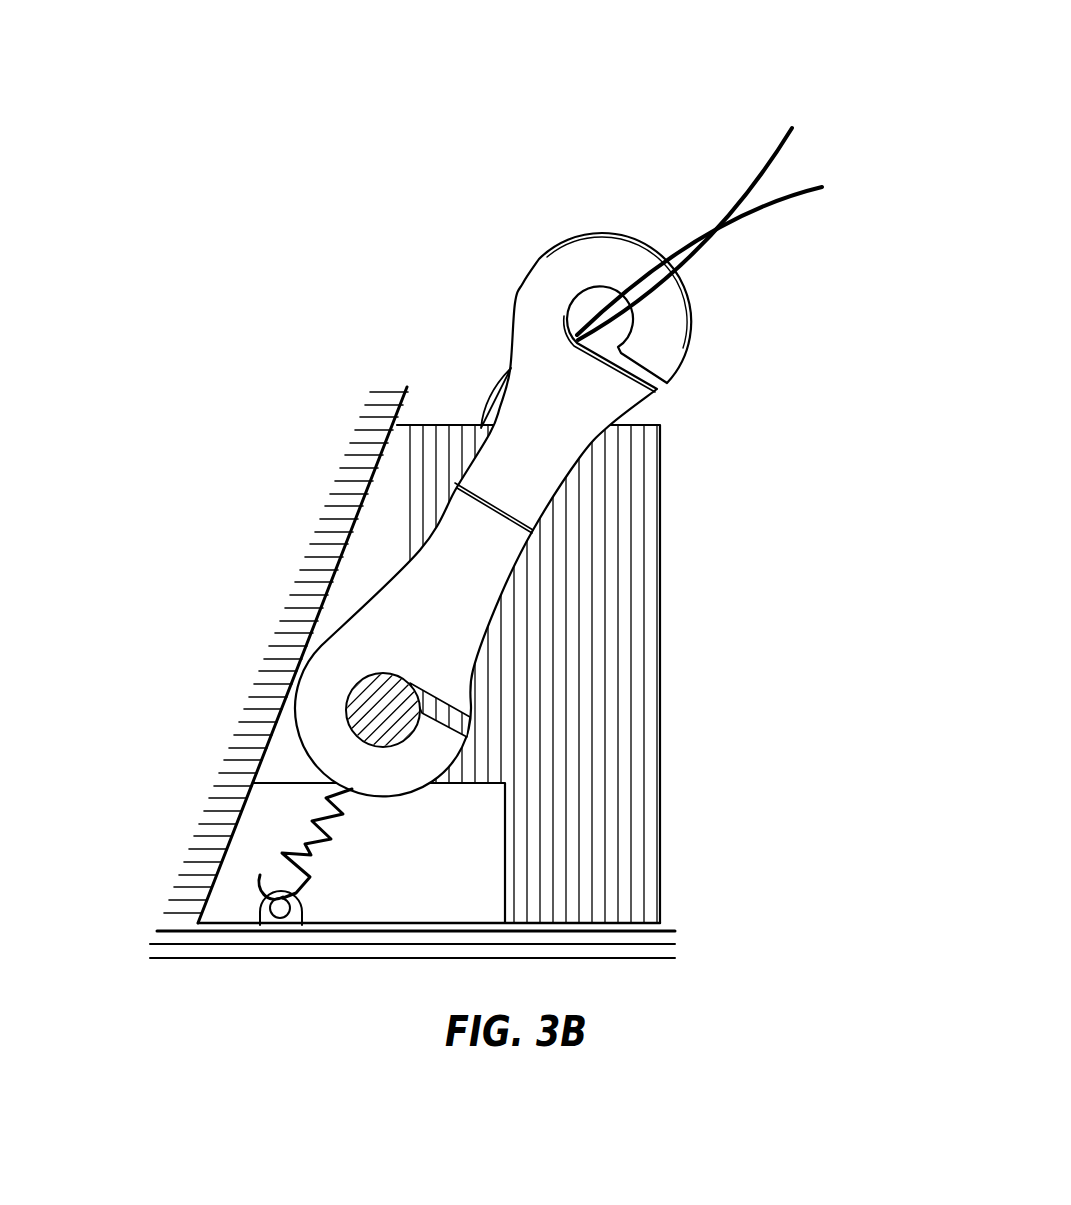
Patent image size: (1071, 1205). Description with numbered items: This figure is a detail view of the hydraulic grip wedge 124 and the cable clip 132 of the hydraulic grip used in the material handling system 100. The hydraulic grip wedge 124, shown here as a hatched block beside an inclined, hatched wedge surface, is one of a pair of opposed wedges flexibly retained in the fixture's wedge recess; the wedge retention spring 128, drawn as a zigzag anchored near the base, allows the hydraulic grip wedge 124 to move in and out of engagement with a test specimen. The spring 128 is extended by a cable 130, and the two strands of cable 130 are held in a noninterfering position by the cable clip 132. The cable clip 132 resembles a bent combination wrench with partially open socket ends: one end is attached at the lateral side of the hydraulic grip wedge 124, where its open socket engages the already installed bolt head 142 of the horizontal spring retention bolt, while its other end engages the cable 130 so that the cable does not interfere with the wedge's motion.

The material handling system 100 is at (138, 364).
The hydraulic grip wedge 124 is at (658, 577).
The wedge retention spring 128 is at (310, 840).
The cable 130 is at (726, 238).
The cable clip 132 is at (522, 281).
The bolt head 142 is at (363, 743).